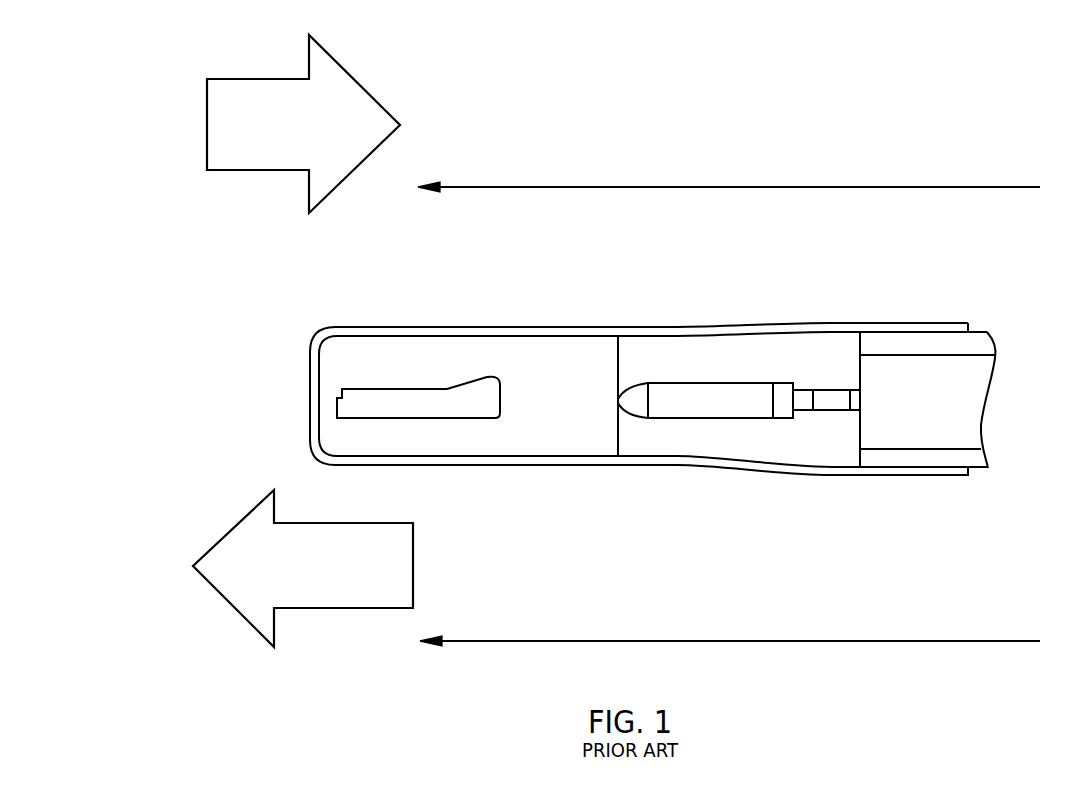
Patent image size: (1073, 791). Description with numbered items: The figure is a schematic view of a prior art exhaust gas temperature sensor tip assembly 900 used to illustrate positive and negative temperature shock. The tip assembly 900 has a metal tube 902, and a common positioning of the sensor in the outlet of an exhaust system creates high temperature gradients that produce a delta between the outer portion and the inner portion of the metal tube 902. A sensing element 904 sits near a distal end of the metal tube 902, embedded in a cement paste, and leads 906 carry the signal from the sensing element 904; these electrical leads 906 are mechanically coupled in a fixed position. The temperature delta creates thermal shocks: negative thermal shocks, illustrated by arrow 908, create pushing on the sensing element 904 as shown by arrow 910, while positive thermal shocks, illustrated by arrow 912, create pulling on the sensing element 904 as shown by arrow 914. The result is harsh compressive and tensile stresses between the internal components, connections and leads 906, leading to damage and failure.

The tip assembly 900 is at (293, 385).
The metal tube 902 is at (590, 333).
The sensing element 904 is at (418, 402).
The leads 906 is at (721, 398).
The arrow 908 is at (376, 97).
The arrow 910 is at (987, 186).
The arrow 912 is at (237, 609).
The arrow 914 is at (858, 642).